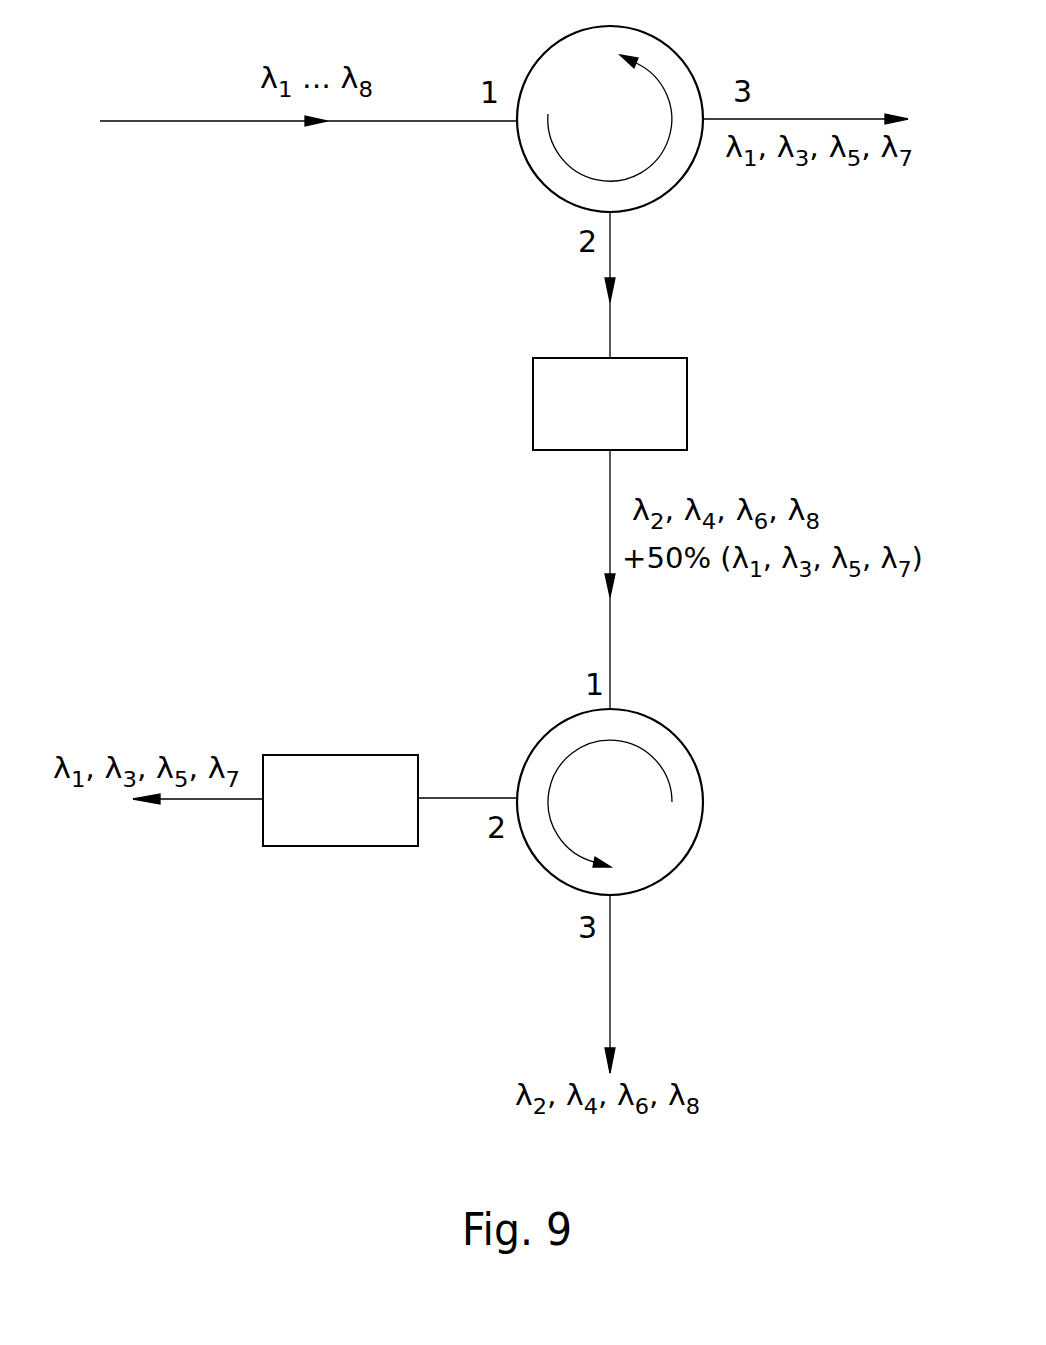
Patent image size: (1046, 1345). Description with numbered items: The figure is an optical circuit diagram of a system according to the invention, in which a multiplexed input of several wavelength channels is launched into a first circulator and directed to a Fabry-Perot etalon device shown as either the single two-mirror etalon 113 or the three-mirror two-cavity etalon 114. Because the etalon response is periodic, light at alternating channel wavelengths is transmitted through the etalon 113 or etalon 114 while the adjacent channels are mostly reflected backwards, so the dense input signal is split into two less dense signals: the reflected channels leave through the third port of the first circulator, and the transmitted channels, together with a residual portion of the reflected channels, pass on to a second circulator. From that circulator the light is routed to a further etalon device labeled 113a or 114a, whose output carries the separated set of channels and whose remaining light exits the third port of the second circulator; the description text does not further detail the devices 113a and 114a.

The single etalon 113 is at (705, 370).
The three-mirror two-cavity etalon 114 is at (660, 366).
The second optical filter 113a is at (401, 762).
The second optical filter 114a is at (295, 757).